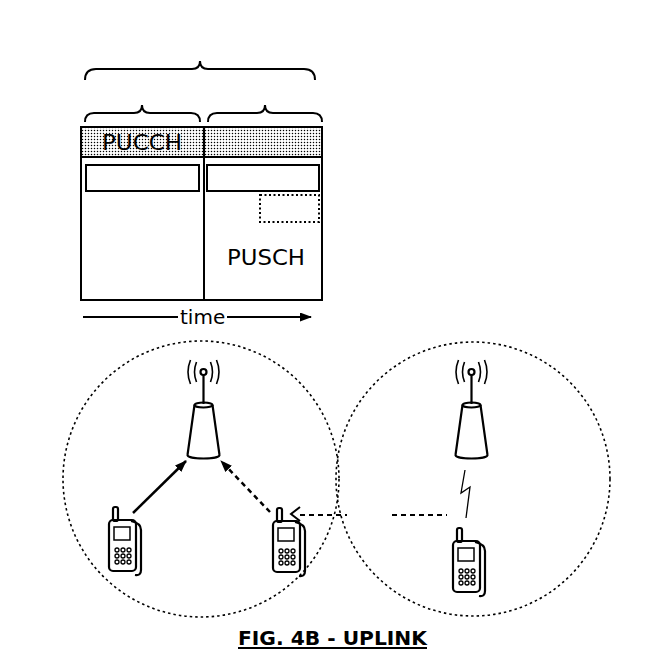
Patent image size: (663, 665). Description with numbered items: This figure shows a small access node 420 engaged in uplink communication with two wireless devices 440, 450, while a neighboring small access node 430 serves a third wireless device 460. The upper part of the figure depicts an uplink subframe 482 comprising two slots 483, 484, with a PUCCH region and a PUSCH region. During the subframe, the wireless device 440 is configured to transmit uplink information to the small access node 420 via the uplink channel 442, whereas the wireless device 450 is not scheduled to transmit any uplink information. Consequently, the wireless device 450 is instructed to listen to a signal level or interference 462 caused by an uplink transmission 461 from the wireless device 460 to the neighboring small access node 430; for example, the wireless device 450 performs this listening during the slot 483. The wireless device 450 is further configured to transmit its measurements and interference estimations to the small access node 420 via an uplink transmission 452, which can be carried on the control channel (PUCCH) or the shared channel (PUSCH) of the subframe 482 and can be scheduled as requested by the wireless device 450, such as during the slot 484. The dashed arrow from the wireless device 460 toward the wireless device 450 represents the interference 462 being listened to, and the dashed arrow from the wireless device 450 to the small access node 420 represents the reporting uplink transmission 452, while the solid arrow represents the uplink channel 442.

The small access node 420 is at (190, 427).
The neighboring small access node 430 is at (486, 427).
The wireless device 440 is at (108, 540).
The uplink channel 442 is at (158, 488).
The wireless device 450 is at (273, 542).
The uplink channel / uplink transmission 452 is at (244, 481).
The wireless device 460 is at (480, 543).
The communication link / uplink transmission 461 is at (470, 490).
The interference 462 is at (369, 515).
The subframe 482 is at (206, 60).
The slot 483 is at (148, 98).
The slot 484 is at (273, 98).